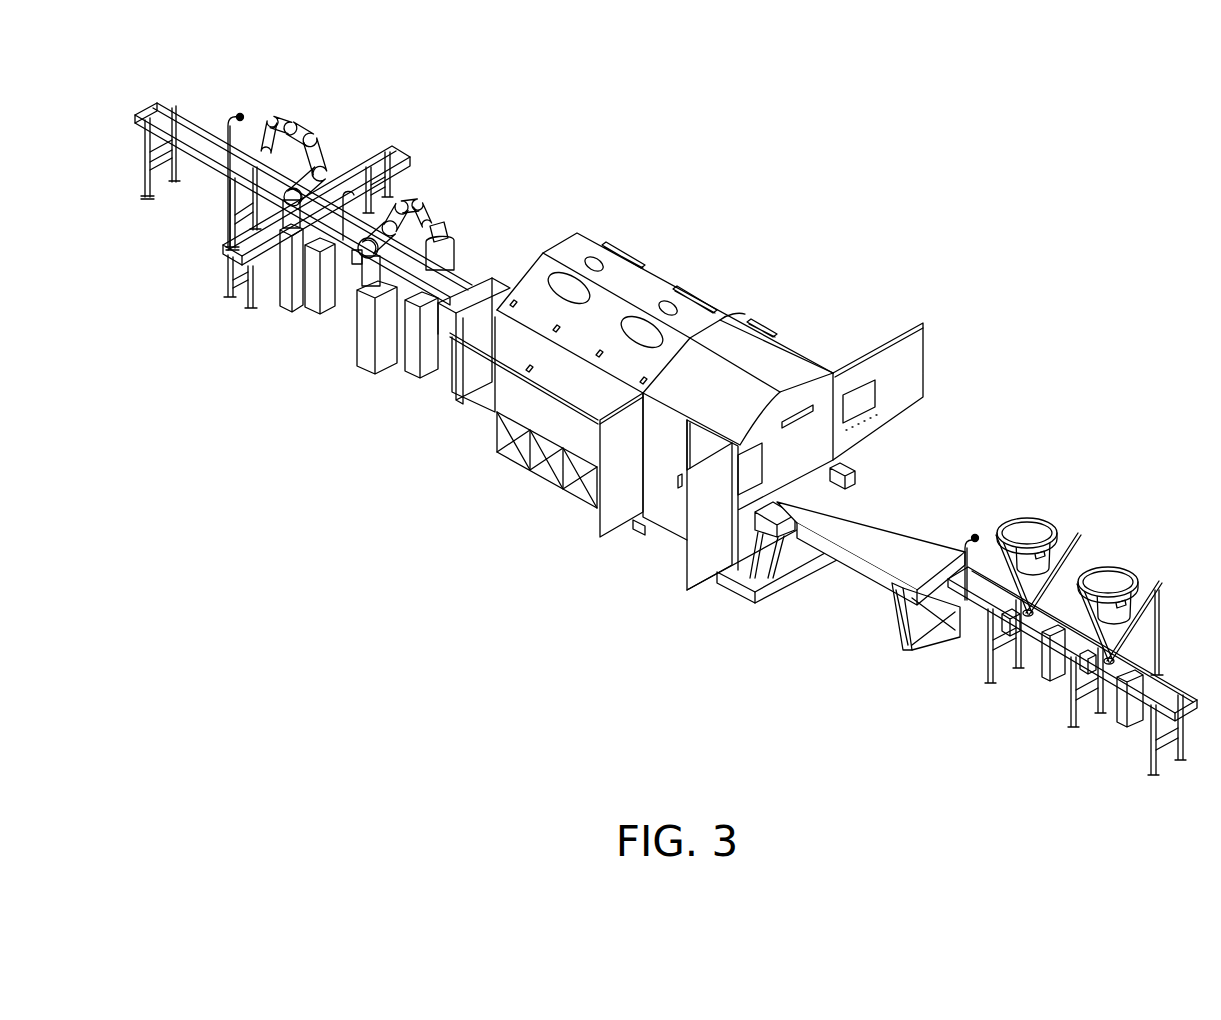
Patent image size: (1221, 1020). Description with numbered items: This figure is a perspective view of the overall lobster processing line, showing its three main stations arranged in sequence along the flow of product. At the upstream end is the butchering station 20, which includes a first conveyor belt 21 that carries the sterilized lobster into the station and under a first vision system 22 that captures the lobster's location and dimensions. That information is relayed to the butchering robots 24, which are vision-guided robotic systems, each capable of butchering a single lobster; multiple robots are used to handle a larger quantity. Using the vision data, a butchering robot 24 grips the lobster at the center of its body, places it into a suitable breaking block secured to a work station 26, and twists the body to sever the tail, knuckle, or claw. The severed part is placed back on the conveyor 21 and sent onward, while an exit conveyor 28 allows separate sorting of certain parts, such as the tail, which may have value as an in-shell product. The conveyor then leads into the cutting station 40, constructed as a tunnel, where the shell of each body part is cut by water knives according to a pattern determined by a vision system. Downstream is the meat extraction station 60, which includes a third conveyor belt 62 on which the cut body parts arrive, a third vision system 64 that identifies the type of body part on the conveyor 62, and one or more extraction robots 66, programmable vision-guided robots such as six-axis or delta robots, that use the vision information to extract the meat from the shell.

The butchering station 20 is at (140, 100).
The first conveyor belt 21 is at (196, 140).
The first vision system 22 is at (246, 117).
The butchering robot 24 is at (320, 165).
The work station 26 is at (440, 233).
The exit conveyor 28 is at (397, 147).
The cutting station 40 is at (680, 256).
The meat extraction station 60 is at (1108, 510).
The third conveyor belt 62 is at (1187, 707).
The third vision system 64 is at (978, 536).
The extraction robot 66 is at (1033, 528).